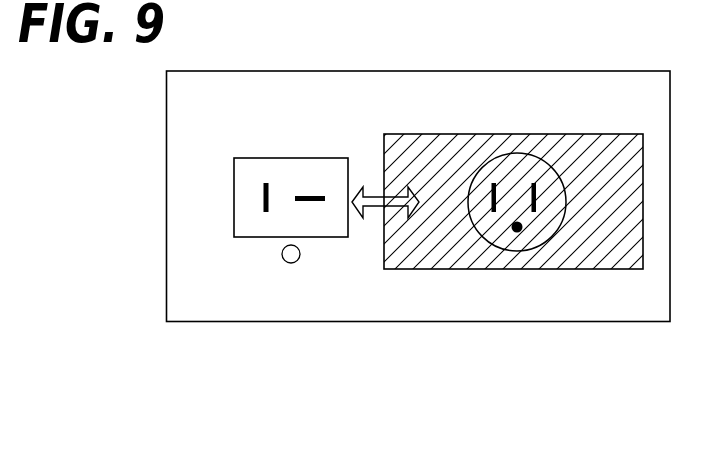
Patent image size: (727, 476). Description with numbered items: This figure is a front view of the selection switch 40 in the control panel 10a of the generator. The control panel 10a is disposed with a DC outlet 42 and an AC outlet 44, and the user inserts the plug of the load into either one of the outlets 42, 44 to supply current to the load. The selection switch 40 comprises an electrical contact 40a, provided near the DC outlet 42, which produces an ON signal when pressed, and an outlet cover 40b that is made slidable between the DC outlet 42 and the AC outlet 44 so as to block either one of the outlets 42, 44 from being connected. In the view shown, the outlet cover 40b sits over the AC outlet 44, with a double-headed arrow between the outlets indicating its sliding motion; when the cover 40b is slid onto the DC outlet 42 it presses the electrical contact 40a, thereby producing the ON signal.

The control panel 10a is at (548, 71).
The DC outlet 42 is at (234, 195).
The AC outlet 44 is at (558, 178).
The selection switch 40 is at (473, 258).
The electrical contact 40a is at (291, 263).
The outlet cover 40b is at (448, 270).